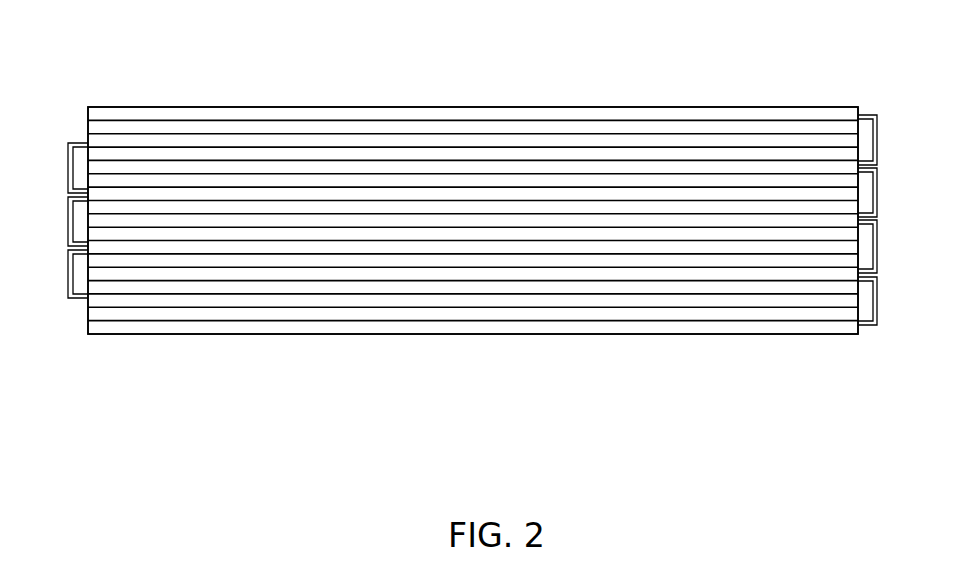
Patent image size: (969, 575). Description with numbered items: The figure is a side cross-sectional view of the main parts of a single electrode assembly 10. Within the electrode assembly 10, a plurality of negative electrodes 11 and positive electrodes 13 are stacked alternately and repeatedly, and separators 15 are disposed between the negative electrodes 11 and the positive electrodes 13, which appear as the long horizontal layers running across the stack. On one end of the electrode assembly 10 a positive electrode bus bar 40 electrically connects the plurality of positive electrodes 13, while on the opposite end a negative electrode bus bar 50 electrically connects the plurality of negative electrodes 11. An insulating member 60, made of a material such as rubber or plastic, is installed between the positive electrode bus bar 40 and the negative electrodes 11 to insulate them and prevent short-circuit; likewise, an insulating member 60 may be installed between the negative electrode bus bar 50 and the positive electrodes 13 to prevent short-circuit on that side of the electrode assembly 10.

The electrode assembly 10 is at (459, 86).
The negative electrode 11 is at (793, 112).
The positive electrode 13 is at (177, 193).
The separator 15 is at (712, 167).
The positive electrode bus bar 40 is at (68, 206).
The negative electrode bus bar 50 is at (878, 235).
The insulating member 60 is at (78, 273).